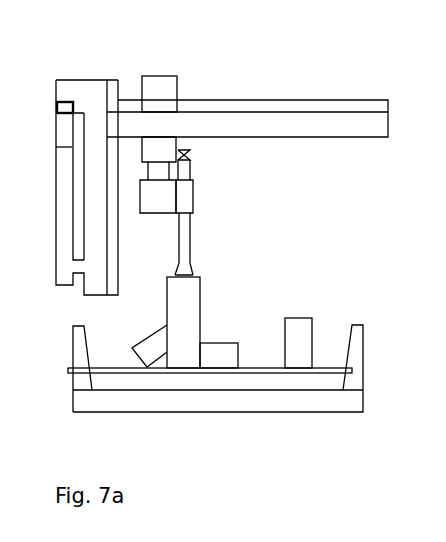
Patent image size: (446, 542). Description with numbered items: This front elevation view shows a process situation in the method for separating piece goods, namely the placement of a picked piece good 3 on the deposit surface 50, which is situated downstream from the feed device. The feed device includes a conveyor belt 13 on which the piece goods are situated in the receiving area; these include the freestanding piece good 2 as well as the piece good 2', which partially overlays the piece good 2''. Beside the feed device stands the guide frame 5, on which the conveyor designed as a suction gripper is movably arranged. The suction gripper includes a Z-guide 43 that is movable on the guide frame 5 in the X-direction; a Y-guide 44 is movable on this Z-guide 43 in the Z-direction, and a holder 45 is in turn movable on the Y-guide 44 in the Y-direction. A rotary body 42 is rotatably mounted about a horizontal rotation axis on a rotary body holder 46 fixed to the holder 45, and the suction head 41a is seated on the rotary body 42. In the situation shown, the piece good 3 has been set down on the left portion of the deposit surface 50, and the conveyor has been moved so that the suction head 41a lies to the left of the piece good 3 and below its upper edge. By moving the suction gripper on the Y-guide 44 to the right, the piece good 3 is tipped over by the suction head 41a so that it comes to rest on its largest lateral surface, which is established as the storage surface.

The piece good 2 is at (218, 399).
The piece good 2' is at (150, 399).
The piece good 2'' is at (232, 408).
The piece good 3 is at (177, 328).
The guide frame 5 is at (65, 168).
The conveyor belt 13 is at (282, 380).
The suction head 41a is at (185, 240).
The rotary body 42 is at (183, 203).
The Z-guide 43 is at (90, 103).
The Y-guide 44 is at (335, 128).
The holder 45 is at (158, 98).
The rotary body holder 46 is at (158, 203).
The deposit surface 50 is at (103, 368).